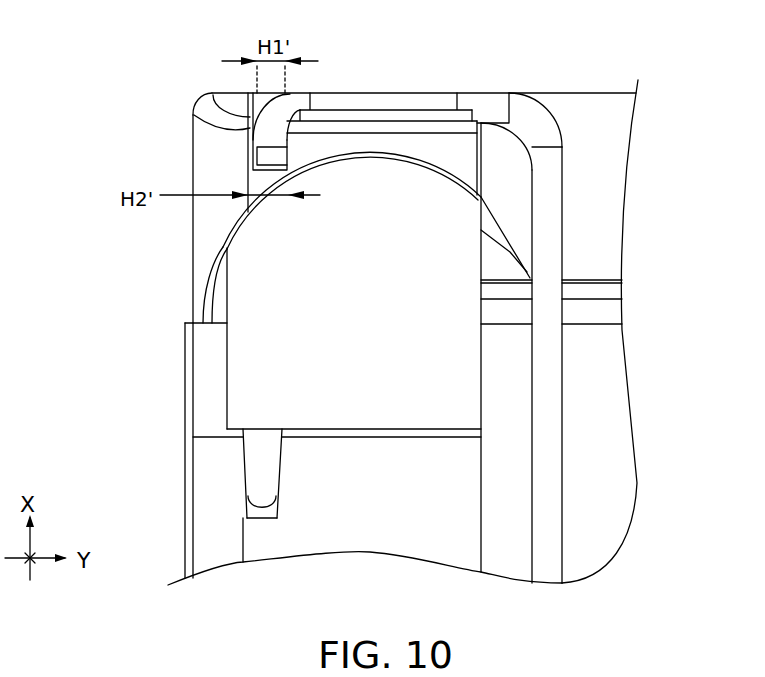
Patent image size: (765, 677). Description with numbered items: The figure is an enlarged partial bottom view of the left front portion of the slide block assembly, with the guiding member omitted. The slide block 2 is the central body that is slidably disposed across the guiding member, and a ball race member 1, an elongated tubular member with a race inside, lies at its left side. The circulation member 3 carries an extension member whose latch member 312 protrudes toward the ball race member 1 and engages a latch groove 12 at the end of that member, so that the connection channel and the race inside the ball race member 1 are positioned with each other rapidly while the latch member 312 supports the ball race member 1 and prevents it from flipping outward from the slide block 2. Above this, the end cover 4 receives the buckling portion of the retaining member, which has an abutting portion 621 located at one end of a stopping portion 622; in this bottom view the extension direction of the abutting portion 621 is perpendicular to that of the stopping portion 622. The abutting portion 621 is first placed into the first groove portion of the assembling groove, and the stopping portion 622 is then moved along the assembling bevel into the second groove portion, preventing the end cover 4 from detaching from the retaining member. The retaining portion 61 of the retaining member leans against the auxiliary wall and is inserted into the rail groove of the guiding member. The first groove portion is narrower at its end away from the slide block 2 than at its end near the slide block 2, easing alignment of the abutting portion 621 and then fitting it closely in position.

The ball race member 1 is at (208, 550).
The latch groove 12 is at (258, 512).
The slide block 2 is at (600, 352).
The circulation member 3 is at (208, 370).
The latch member 312 is at (258, 457).
The end cover 4 is at (207, 235).
The retaining portion 61 is at (553, 262).
The abutting portion 621 is at (273, 140).
The stopping portion 622 is at (375, 108).